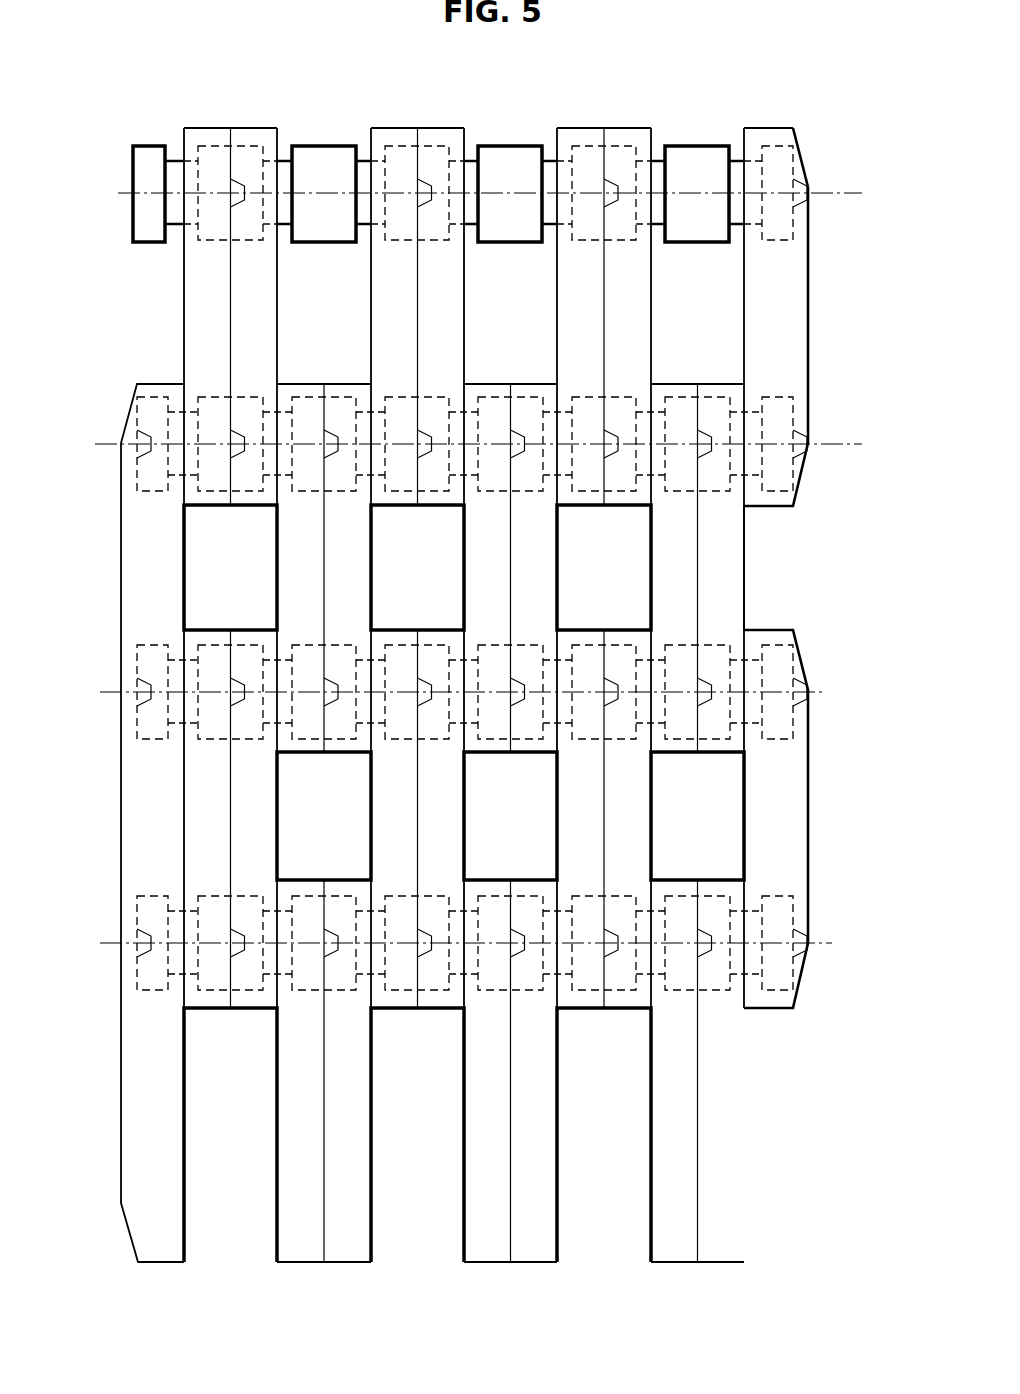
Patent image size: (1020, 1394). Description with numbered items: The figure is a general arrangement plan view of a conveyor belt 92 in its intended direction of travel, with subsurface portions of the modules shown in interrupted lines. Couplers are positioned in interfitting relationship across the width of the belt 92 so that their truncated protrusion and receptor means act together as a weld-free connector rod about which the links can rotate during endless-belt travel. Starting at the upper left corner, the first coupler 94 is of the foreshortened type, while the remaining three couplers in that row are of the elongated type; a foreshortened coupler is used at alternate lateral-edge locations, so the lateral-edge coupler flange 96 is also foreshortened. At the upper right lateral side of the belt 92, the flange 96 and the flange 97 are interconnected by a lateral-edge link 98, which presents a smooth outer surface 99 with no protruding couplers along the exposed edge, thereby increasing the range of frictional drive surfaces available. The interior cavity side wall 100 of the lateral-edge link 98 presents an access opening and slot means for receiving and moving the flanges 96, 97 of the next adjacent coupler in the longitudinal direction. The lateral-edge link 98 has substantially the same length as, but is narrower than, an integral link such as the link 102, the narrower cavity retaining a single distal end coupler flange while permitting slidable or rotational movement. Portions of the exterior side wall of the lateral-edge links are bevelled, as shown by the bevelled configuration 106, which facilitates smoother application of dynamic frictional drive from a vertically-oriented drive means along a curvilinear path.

The belt 92 is at (101, 1262).
The first coupler 94 is at (152, 157).
The lateral-edge coupler flange 96 is at (776, 483).
The flange 97 is at (771, 145).
The lateral-edge link 98 is at (840, 166).
The smooth outer surface 99 is at (808, 290).
The interior cavity side wall 100 is at (744, 288).
The link 102 is at (586, 125).
The bevelled configuration 106 is at (803, 476).